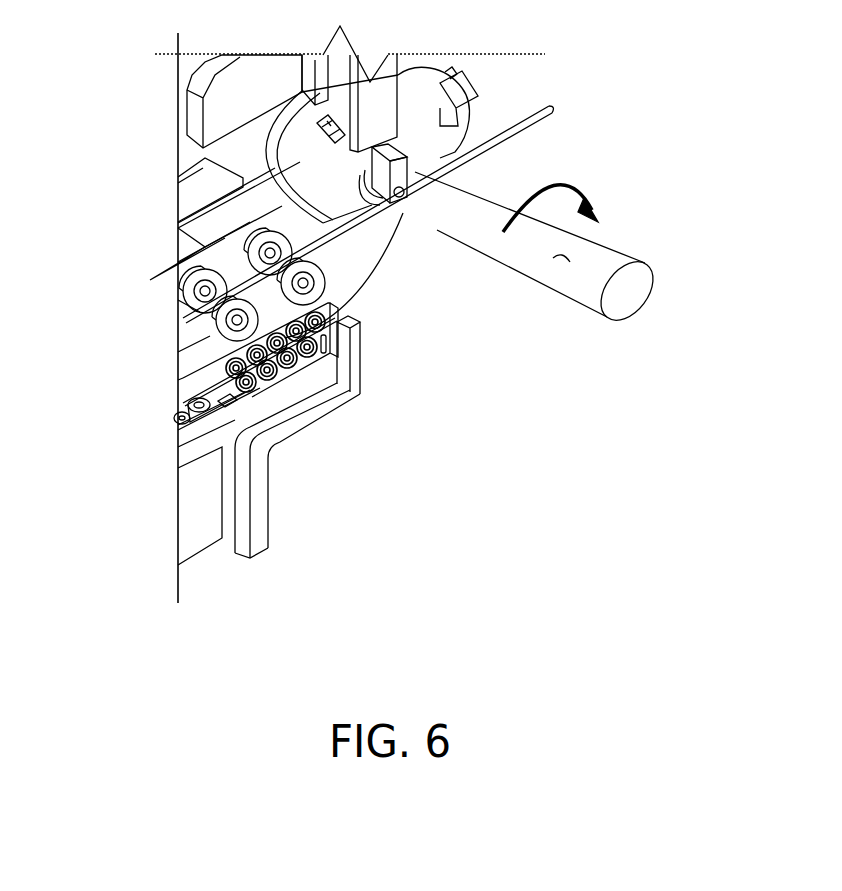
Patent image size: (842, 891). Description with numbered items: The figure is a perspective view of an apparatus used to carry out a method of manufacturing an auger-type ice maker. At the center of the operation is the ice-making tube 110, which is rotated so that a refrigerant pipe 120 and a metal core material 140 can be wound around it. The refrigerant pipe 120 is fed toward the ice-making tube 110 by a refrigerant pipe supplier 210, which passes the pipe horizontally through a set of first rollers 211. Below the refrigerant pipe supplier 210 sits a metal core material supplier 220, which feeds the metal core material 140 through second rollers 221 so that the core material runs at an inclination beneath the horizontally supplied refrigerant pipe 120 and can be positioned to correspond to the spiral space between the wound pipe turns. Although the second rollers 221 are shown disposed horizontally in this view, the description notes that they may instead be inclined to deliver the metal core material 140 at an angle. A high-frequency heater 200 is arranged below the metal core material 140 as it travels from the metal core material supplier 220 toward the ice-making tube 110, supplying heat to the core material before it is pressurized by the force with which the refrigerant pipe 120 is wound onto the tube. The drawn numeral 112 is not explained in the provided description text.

The ice-making tube 110 is at (607, 258).
The rod surface 112 is at (553, 258).
The refrigerant pipe 120 is at (543, 107).
The metal core material 140 is at (372, 283).
The high-frequency heater 200 is at (255, 535).
The refrigerant pipe supplier 210 is at (160, 241).
The first rollers 211 is at (172, 280).
The metal core material supplier 220 is at (160, 426).
The second rollers 221 is at (305, 352).